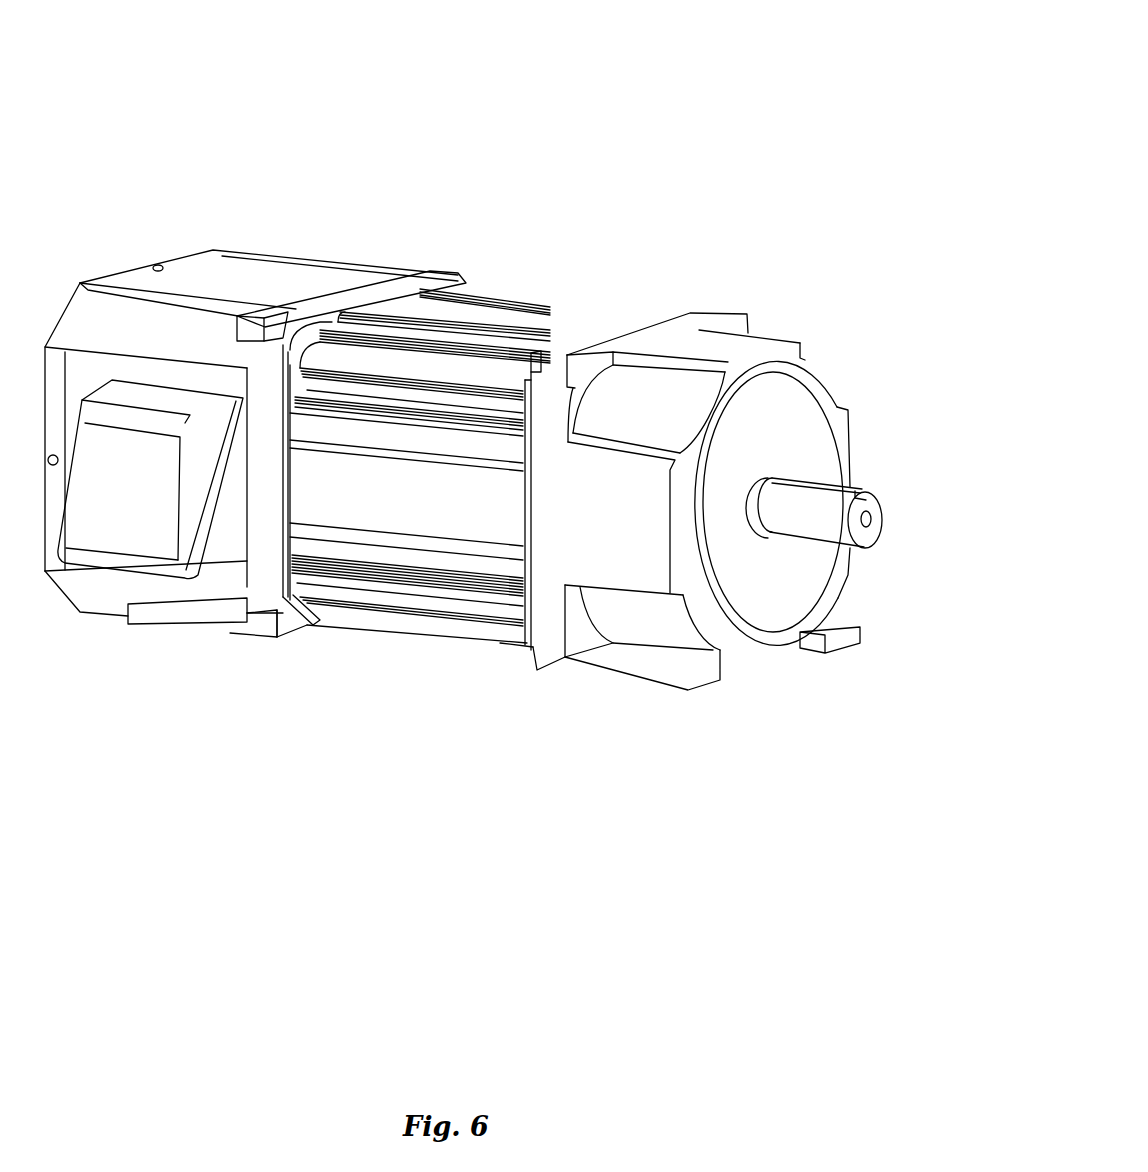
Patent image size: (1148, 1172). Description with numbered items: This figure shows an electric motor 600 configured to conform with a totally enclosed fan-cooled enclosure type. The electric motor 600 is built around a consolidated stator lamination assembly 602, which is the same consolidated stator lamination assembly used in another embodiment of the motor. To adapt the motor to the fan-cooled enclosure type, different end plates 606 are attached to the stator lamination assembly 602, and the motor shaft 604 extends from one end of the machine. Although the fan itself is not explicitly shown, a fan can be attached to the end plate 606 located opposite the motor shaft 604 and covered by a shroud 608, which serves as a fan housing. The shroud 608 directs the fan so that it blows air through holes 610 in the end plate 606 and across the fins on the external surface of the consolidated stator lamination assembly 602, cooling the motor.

The electric motor 600 is at (505, 376).
The consolidated stator lamination assembly 602 is at (603, 310).
The motor shaft 604 is at (878, 490).
The end plates 606 is at (273, 633).
The shroud 608 is at (243, 250).
The holes 610 is at (332, 300).